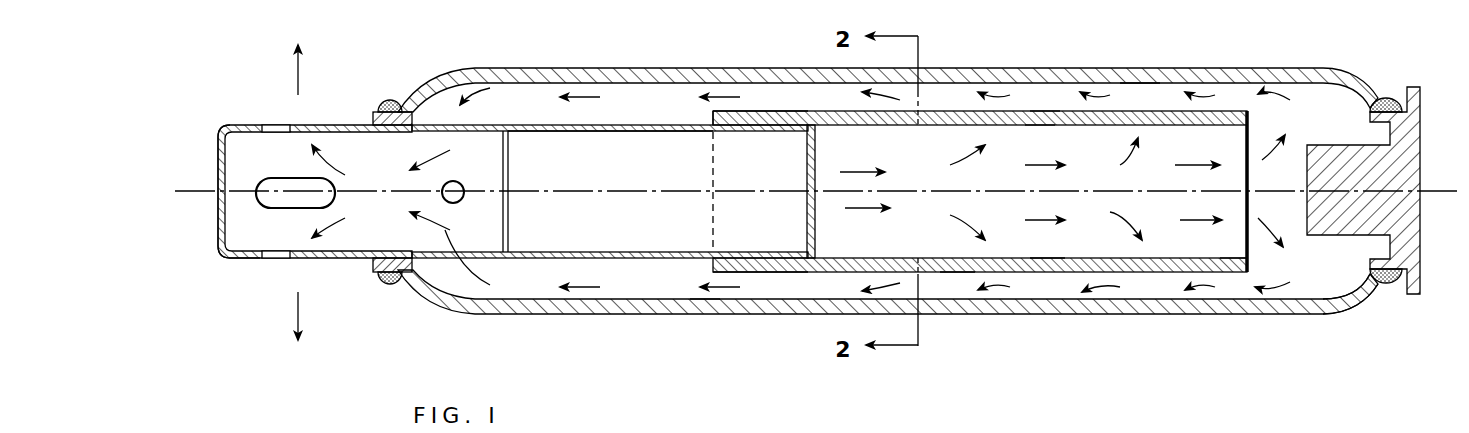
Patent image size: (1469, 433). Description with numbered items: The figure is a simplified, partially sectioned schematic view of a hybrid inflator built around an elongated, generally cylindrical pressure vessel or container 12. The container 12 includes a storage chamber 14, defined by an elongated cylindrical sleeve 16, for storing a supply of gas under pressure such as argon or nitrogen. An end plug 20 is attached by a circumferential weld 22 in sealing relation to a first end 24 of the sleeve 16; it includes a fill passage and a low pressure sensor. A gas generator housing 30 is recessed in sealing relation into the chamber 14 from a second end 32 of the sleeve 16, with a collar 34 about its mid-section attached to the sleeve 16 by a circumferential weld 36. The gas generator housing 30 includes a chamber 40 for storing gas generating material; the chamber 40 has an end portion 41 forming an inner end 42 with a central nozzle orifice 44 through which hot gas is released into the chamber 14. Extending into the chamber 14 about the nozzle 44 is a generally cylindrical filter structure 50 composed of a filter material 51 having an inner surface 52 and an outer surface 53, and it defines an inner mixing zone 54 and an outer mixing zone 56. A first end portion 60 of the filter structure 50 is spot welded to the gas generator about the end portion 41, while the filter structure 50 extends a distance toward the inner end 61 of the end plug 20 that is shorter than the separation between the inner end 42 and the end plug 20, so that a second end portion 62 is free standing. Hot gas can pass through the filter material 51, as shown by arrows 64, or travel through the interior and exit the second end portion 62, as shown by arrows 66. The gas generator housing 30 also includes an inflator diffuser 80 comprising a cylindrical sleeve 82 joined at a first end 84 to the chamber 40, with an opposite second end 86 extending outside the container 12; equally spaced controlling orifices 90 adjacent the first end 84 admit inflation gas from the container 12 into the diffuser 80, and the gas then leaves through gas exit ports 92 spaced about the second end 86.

The pressure vessel or container 12 is at (628, 69).
The storage chamber 14 is at (1302, 275).
The cylindrical sleeve 16 is at (706, 313).
The end plug 20 is at (1412, 115).
The circumferential weld 22 is at (1380, 290).
The first end of the sleeve 24 is at (1335, 70).
The gas generator housing 30 is at (593, 125).
The second end of the sleeve 32 is at (420, 88).
The collar 34 is at (375, 112).
The circumferential weld 36 is at (393, 285).
The pyrotechnic chamber 40 is at (582, 205).
The end portion of the chamber 41 is at (780, 120).
The inner end 42 is at (822, 238).
The nozzle orifice 44 is at (805, 205).
The filter structure 50 is at (938, 112).
The filter material 51 is at (1043, 137).
The inner surface 52 is at (1042, 137).
The outer surface 53 is at (958, 290).
The inner mixing zone 54 is at (1049, 236).
The outer mixing zone 56 is at (1138, 85).
The first end portion of the filter structure 60 is at (735, 112).
The inner end of the end plug 61 is at (1375, 240).
The second end portion of the filter structure 62 is at (1238, 265).
The arrows 64 is at (985, 95).
The arrows 66 is at (1205, 160).
The inflator diffuser 80 is at (362, 258).
The cylindrical sleeve of the diffuser 82 is at (242, 262).
The first end of the diffuser 84 is at (497, 225).
The second end of the diffuser 86 is at (221, 130).
The controlling orifices 90 is at (448, 127).
The gas exit ports 92 is at (277, 128).